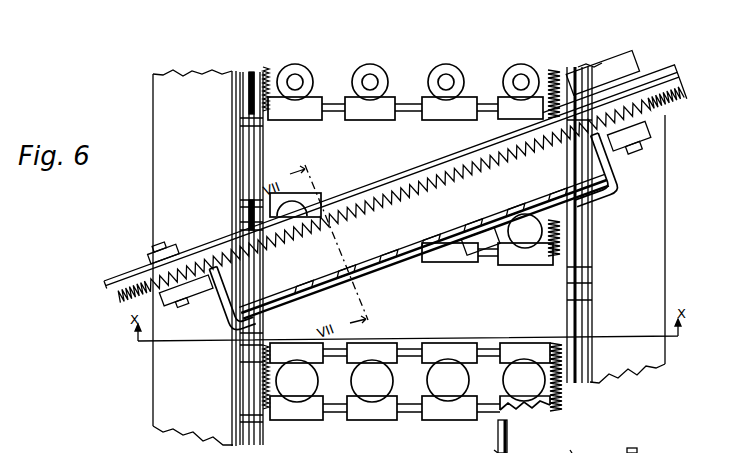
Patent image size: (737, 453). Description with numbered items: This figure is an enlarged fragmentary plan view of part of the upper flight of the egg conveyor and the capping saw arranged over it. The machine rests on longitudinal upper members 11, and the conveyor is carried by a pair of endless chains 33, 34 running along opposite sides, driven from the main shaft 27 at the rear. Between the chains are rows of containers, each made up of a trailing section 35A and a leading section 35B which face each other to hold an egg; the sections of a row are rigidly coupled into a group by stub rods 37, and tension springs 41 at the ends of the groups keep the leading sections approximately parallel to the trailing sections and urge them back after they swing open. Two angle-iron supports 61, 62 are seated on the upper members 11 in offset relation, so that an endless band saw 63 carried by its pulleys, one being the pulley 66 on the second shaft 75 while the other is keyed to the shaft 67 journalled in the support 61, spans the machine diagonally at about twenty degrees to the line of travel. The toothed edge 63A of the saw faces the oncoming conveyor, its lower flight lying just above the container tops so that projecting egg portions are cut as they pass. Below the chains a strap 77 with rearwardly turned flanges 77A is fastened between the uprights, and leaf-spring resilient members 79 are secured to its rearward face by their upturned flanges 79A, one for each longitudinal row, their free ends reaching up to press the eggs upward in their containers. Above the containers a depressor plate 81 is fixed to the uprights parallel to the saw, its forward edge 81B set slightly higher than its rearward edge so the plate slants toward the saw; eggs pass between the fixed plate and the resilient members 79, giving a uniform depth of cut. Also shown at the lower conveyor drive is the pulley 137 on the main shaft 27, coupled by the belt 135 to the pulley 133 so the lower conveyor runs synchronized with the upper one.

The longitudinal upper member 11 is at (165, 201).
The endless chain 34 is at (242, 158).
The endless chain 33 is at (571, 292).
The stub rod 37 is at (421, 318).
The tension spring 41 is at (272, 383).
The trailing section 35A is at (297, 406).
The leading section 35B is at (534, 342).
The pulley 66 is at (124, 276).
The second shaft 75 is at (157, 245).
The toothed edge 63A is at (128, 306).
The endless band saw 63 is at (412, 180).
The support 61 is at (642, 122).
The shaft 67 is at (628, 148).
The support 62 is at (157, 300).
The rearwardly turned flange 77A is at (608, 170).
The depressor plate 81 is at (460, 221).
The strap 77 is at (405, 267).
The resilient member 79 is at (276, 300).
The upturned flange 79A is at (341, 283).
The forward edge 81B is at (428, 265).
The shaft 27 is at (508, 425).
The pulley 137 is at (495, 452).
The belt 135 is at (572, 452).
The pulley 133 is at (655, 449).